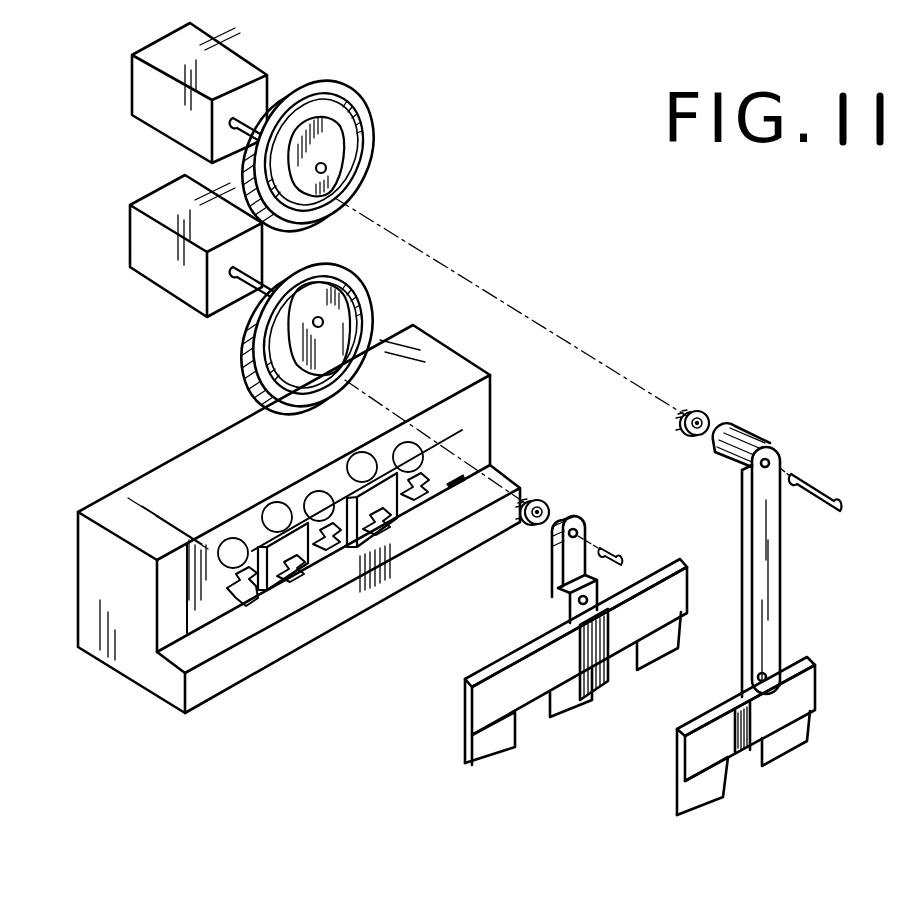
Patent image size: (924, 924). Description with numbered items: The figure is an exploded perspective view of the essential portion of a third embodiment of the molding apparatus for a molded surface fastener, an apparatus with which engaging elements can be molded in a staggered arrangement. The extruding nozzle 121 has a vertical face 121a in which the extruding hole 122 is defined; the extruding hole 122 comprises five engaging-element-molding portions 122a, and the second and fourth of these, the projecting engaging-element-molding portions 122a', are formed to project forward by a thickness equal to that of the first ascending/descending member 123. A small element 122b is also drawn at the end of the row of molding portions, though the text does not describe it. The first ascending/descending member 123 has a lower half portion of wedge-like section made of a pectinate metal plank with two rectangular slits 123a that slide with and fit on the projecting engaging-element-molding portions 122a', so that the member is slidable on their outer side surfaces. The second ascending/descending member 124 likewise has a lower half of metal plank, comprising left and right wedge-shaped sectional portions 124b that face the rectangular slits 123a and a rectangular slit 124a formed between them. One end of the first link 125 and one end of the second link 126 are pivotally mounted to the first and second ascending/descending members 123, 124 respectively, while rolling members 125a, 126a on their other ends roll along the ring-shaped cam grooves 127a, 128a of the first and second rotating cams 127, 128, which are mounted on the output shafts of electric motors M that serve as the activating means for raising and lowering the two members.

The electric motor M is at (135, 238).
The extruding nozzle 121 is at (111, 482).
The vertical face 121a is at (258, 597).
The extruding hole 122 is at (244, 608).
The engaging-element-molding portion 122a is at (149, 649).
The projecting engaging-element-molding portion 122a' is at (338, 570).
The stopper pin 122b is at (450, 492).
The first ascending/descending member 123 is at (460, 764).
The rectangular slit 123a is at (607, 682).
The second ascending/descending member 124 is at (676, 798).
The rectangular slit 124a is at (745, 765).
The wedge-shaped sectional portion 124b is at (798, 732).
The first link 125 is at (553, 568).
The rolling member 125a is at (544, 500).
The second link 126 is at (772, 563).
The rolling member 126a is at (702, 411).
The first rotating cam 127 is at (372, 309).
The cam groove 127a is at (352, 297).
The second rotating cam 128 is at (343, 82).
The cam groove 128a is at (346, 119).